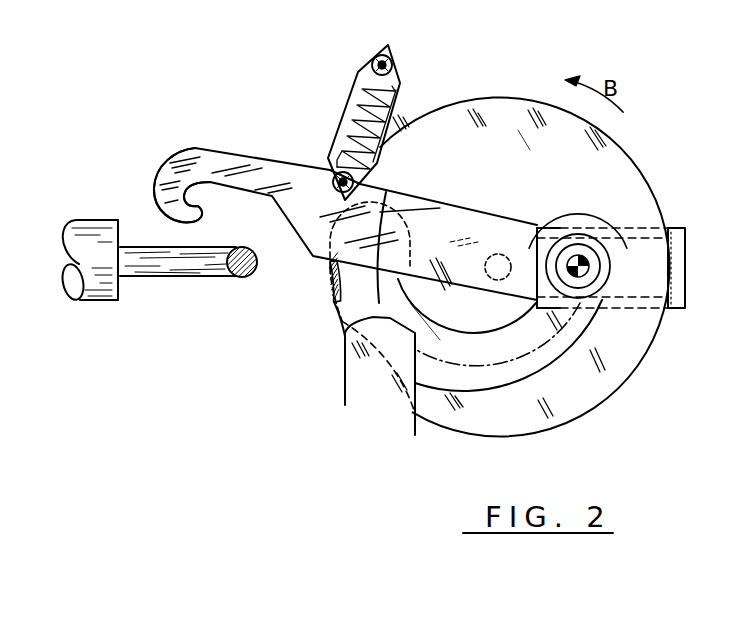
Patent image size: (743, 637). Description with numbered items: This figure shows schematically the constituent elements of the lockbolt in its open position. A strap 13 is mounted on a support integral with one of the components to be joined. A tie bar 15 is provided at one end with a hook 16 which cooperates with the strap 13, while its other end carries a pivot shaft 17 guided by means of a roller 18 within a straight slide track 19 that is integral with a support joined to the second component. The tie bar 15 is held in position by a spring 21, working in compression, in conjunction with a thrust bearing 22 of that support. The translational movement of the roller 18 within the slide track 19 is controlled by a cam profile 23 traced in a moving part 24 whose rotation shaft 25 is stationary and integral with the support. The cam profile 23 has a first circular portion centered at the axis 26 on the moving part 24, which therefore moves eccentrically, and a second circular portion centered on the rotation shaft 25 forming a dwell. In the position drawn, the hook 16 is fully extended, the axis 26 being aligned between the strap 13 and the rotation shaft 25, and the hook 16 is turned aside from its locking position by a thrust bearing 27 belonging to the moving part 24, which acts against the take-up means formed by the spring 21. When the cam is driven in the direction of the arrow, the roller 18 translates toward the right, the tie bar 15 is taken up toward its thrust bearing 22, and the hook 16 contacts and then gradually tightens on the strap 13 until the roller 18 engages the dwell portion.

The strap 13 is at (205, 272).
The tie bar 15 is at (427, 247).
The hook 16 is at (186, 166).
The pivot shaft 17 is at (594, 257).
The roller 18 is at (580, 262).
The slide track 19 is at (657, 309).
The spring 21 is at (346, 110).
The thrust bearing 22 is at (347, 368).
The cam profile 23 is at (530, 367).
The moving part 24 is at (612, 367).
The rotation shaft 25 is at (497, 260).
The axis 26 is at (473, 262).
The thrust bearing 27 is at (328, 263).